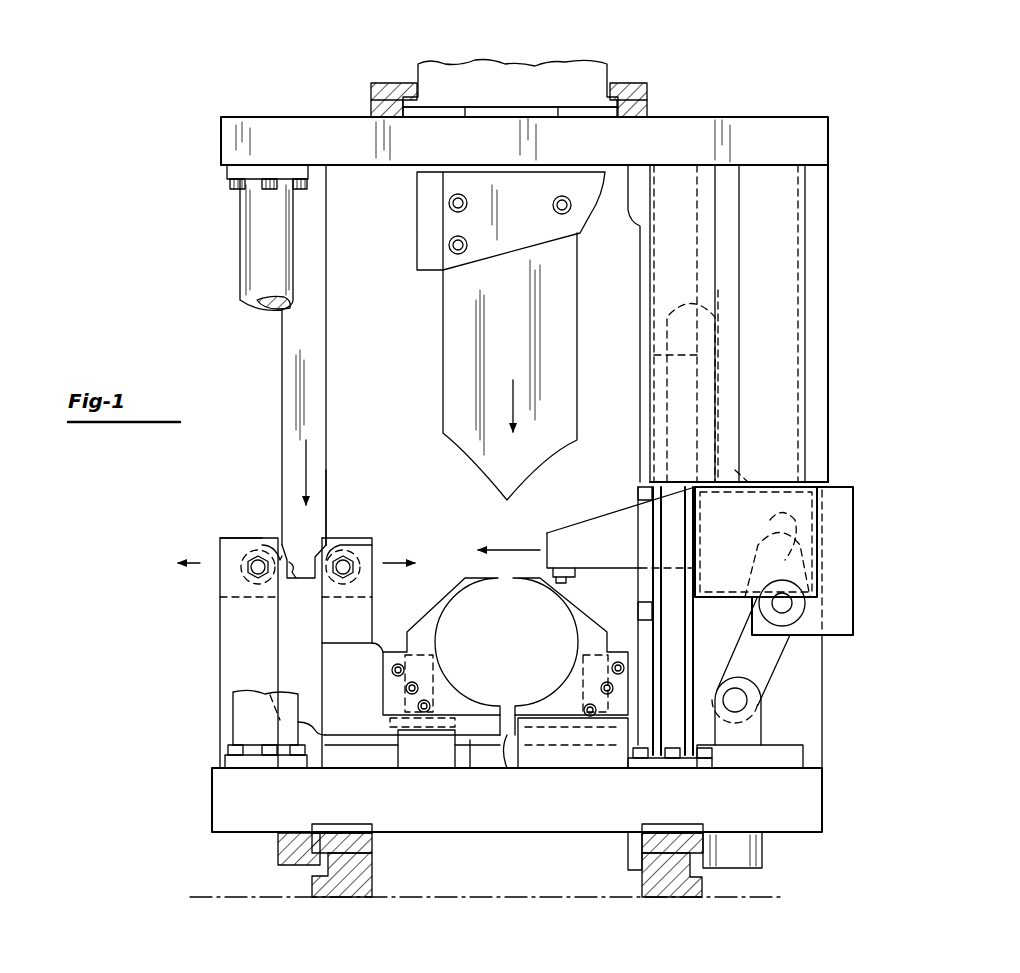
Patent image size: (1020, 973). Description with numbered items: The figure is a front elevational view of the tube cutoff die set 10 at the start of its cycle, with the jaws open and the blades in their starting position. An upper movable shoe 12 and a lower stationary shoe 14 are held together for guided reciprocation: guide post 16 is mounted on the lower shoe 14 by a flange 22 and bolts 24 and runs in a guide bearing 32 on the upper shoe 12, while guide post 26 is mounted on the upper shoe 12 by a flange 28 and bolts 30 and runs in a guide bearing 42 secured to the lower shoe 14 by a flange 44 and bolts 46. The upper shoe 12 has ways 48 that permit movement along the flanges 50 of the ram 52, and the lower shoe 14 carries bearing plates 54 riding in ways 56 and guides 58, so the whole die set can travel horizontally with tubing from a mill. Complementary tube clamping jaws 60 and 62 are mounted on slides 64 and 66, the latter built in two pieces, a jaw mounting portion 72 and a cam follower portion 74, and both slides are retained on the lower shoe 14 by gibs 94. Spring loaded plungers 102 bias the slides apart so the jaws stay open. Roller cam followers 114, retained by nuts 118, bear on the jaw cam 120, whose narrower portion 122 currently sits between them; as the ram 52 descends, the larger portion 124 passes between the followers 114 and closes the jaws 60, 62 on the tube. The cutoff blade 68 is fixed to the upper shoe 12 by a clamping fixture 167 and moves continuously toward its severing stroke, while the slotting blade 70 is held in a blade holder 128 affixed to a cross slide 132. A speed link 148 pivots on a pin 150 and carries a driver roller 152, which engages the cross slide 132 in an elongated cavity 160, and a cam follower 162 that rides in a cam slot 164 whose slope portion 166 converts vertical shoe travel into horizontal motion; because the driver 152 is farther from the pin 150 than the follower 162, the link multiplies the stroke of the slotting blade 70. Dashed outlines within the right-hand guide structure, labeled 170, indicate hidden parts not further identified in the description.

The tube cutoff die set 10 is at (830, 112).
The upper movable shoe 12 is at (300, 115).
The lower stationary shoe 14 is at (823, 798).
The guide post 16 is at (690, 652).
The flange 22 is at (645, 770).
The bolts 24 is at (682, 768).
The guide post 26 is at (242, 240).
The flange 28 is at (228, 172).
The bolts 30 is at (266, 190).
The guide bearing 32 is at (640, 264).
The guide bearing 42 is at (232, 712).
The flange 44 is at (222, 762).
The bolts 46 is at (280, 728).
The ways 48 is at (390, 86).
The flanges 50 is at (378, 102).
The ram 52 is at (568, 58).
The bearing plates 54 is at (372, 842).
The ways 56 is at (280, 855).
The guides 58 is at (373, 878).
The jaw 60 is at (460, 598).
The jaw 62 is at (575, 630).
The slide 64 is at (373, 606).
The slide 66 is at (472, 770).
The cutoff blade 68 is at (526, 338).
The slotting blade 70 is at (570, 575).
The jaw mounting portion 72 is at (566, 768).
The cam follower portion 74 is at (348, 768).
The gibs 94 is at (418, 768).
The spring loaded plungers 102 is at (510, 765).
The roller cam followers 114 is at (244, 538).
The nuts 118 is at (252, 568).
The jaw cam 120 is at (327, 395).
The smaller open jaw portion 122 is at (296, 580).
The large portion 124 is at (327, 498).
The blade holder 128 is at (598, 522).
The cross slide 132 is at (840, 488).
The speed link 148 is at (780, 660).
The pin 150 is at (745, 712).
The driver roller 152 is at (822, 540).
The elongated cavity 160 is at (822, 508).
The cam follower 162 is at (805, 610).
The cam slot 164 is at (722, 368).
The slope portion 166 is at (736, 470).
The bracket 167 is at (416, 228).
The piston head 170 is at (722, 328).